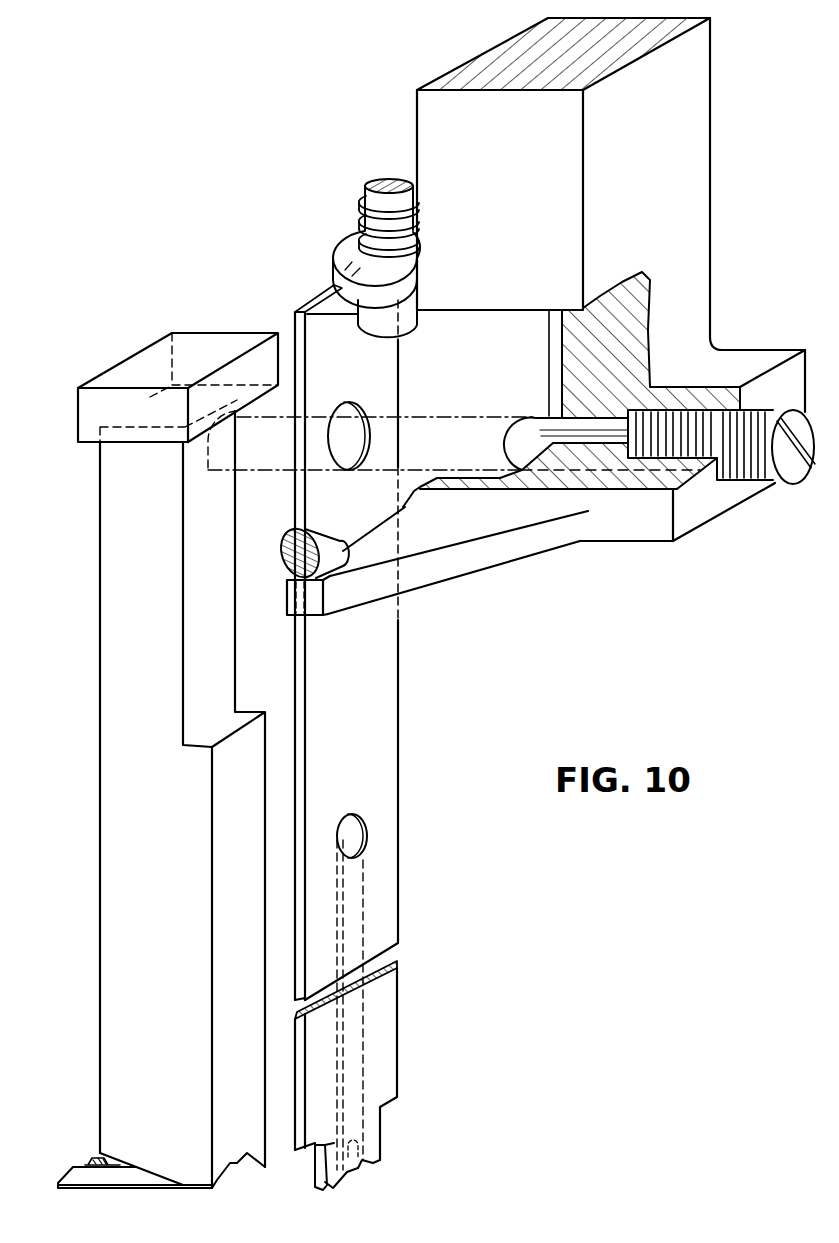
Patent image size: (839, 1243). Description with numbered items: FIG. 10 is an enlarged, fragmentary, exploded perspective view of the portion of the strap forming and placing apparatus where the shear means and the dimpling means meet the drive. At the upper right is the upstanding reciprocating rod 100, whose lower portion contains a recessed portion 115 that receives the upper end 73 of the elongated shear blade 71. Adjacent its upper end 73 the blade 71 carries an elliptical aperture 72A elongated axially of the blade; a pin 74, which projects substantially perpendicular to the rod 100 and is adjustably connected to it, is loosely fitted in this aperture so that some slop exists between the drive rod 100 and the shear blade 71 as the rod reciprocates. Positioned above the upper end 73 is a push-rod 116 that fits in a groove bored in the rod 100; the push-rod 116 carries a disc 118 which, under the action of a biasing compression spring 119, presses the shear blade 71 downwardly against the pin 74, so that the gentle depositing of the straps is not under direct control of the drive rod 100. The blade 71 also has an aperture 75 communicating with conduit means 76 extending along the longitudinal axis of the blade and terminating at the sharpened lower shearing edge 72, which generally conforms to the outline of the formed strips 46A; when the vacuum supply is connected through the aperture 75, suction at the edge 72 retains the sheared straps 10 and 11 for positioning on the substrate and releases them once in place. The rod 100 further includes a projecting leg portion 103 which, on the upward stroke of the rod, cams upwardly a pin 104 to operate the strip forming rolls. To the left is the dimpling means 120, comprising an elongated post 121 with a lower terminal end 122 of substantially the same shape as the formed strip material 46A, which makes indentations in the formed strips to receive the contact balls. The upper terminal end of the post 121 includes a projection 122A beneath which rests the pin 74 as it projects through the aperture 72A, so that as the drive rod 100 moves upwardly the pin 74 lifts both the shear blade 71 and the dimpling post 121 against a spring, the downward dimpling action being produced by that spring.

The reciprocating rod 100 is at (703, 132).
The recessed portion 115 is at (553, 331).
The pin 74 is at (536, 420).
The push-rod 116 is at (388, 180).
The biasing compression spring 119 is at (362, 206).
The disc 118 is at (340, 252).
The upper end 73 is at (298, 309).
The shear blade 71 is at (388, 728).
The elliptical aperture 72A is at (348, 403).
The aperture 75 is at (363, 833).
The conduit means 76 is at (362, 912).
The pin 104 is at (323, 528).
The projecting leg portion 103 is at (480, 565).
The dimpling means 120 is at (80, 725).
The projection 122A is at (133, 362).
The elongated post 121 is at (118, 940).
The lower terminal end 122 is at (183, 1172).
The formed strips 46A is at (85, 1162).
The lower shearing edge 72 is at (316, 1176).
The strap 10 is at (340, 1184).
The strap 11 is at (362, 1168).